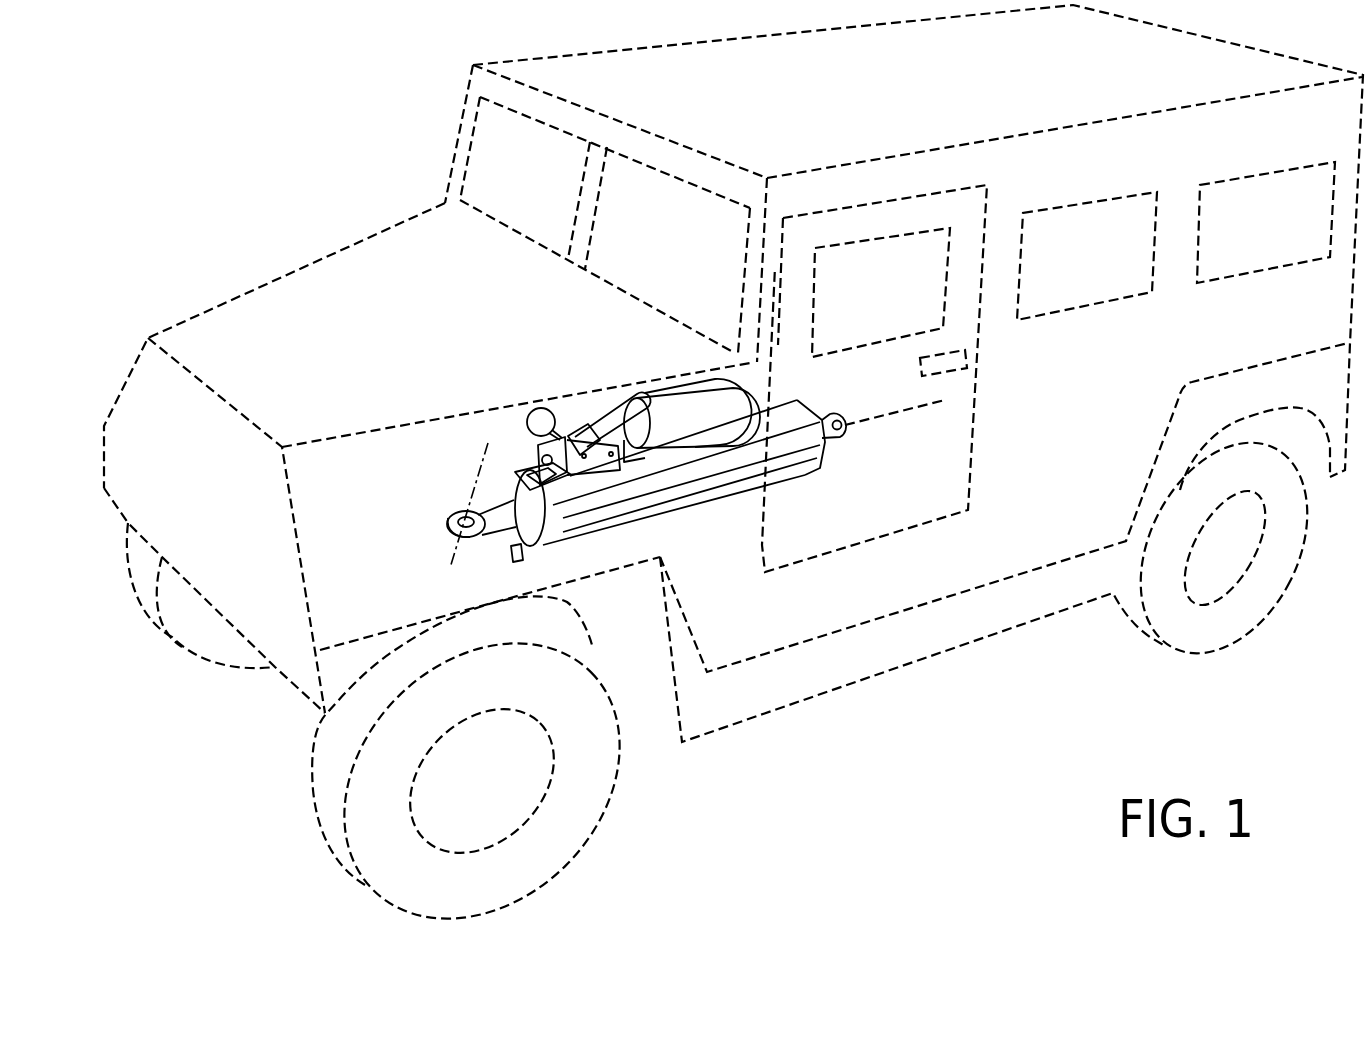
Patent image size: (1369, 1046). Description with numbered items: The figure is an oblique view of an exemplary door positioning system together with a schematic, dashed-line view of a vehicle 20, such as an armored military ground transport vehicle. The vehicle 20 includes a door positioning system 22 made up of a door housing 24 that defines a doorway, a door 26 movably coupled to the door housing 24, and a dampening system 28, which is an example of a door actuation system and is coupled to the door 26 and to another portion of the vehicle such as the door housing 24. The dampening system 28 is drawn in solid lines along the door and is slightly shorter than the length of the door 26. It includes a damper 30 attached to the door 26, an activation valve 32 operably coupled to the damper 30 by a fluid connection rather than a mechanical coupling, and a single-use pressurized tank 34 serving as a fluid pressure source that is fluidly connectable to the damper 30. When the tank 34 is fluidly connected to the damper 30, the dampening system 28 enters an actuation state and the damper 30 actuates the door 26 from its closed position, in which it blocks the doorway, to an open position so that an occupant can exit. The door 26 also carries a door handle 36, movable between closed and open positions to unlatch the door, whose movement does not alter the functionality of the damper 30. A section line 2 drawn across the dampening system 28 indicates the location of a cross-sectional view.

The section line 2- 2 is at (488, 443).
The vehicle 20 is at (330, 104).
The door positioning system 22 is at (1013, 190).
The door housing 24 is at (898, 341).
The door 26 is at (963, 332).
The dampening system 28 is at (619, 440).
The damper 30 is at (814, 478).
The activation valve 32 is at (570, 415).
The single-use pressurized tank 34 is at (730, 386).
The door handle 36 is at (920, 368).